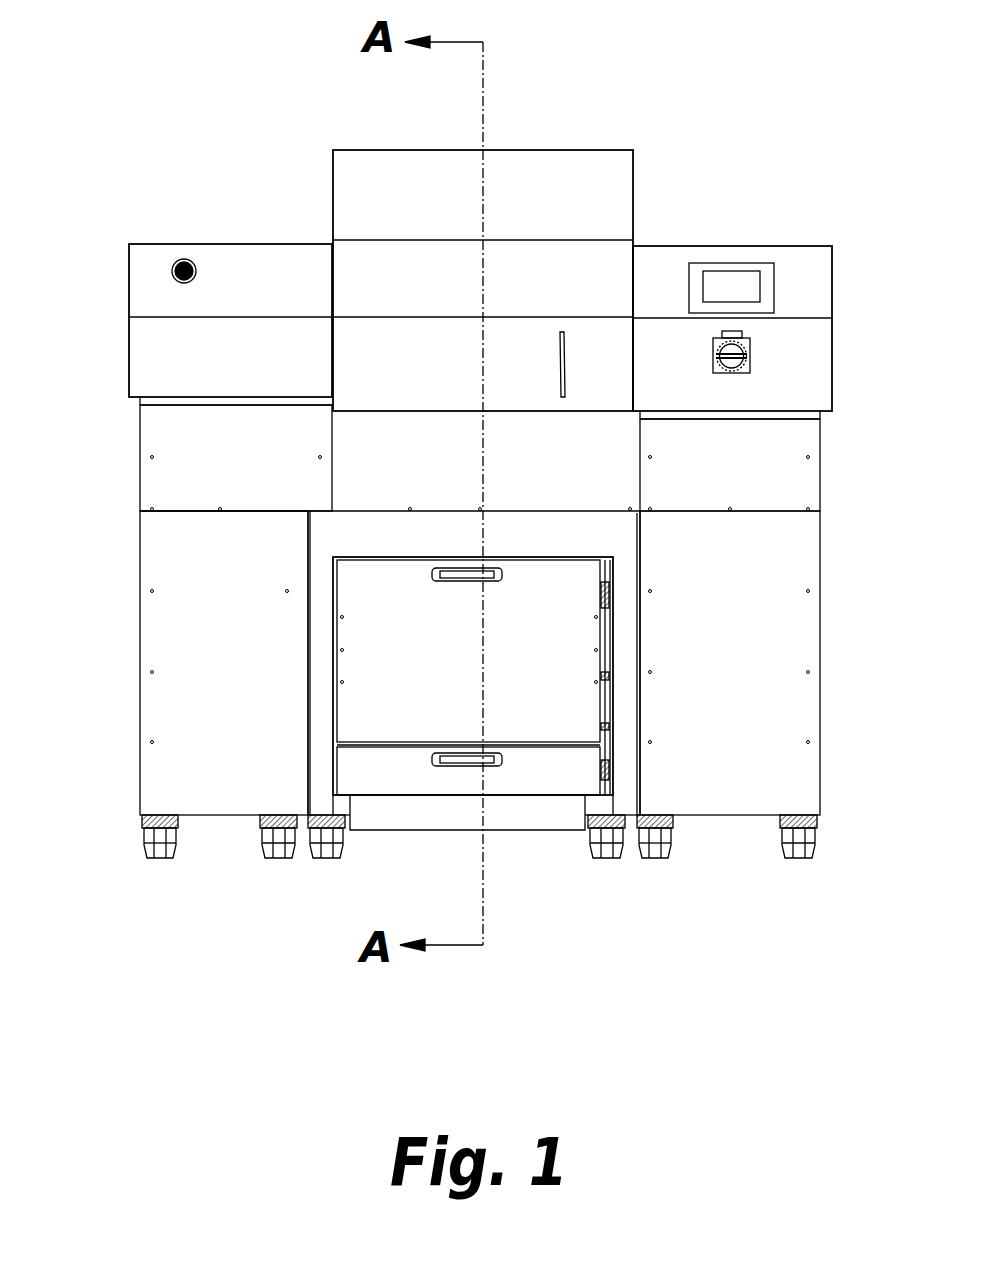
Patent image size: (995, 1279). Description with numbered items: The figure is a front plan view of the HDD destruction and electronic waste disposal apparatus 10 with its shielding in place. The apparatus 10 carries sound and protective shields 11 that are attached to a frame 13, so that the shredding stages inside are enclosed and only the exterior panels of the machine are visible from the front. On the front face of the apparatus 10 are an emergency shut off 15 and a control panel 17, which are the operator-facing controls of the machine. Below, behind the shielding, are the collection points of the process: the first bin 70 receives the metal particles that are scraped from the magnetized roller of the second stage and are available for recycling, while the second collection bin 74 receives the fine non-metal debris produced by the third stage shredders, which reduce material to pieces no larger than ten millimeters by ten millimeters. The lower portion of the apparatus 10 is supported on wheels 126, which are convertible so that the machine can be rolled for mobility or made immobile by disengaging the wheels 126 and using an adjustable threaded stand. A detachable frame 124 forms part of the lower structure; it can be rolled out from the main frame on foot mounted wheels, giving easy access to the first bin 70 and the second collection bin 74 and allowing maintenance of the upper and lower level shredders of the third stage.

The HDD destruction and electronic waste disposal apparatus 10 is at (660, 178).
The sound and protective shields 11 is at (721, 772).
The frame 13 is at (686, 418).
The emergency shut off 15 is at (194, 262).
The control panel 17 is at (713, 283).
The first bin 70 is at (557, 717).
The second collection bin 74 is at (503, 780).
The detachable frame 124 is at (323, 800).
The wheels 126 is at (173, 857).